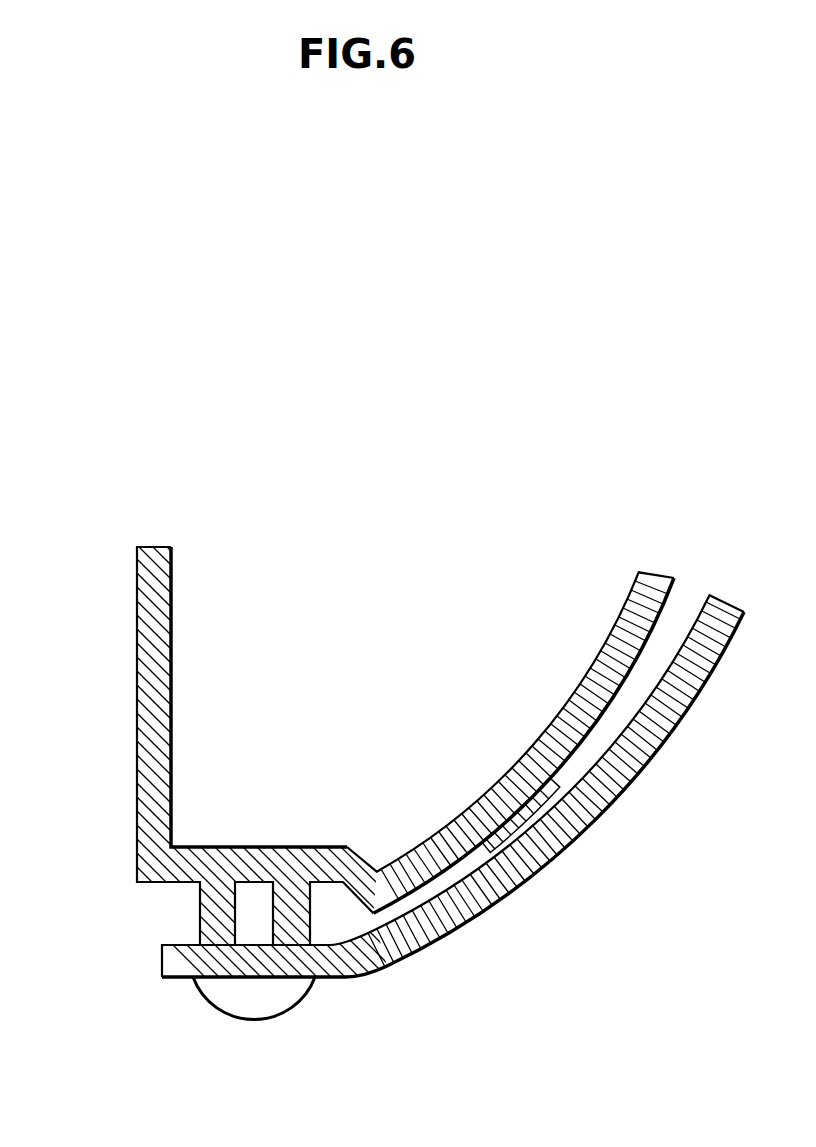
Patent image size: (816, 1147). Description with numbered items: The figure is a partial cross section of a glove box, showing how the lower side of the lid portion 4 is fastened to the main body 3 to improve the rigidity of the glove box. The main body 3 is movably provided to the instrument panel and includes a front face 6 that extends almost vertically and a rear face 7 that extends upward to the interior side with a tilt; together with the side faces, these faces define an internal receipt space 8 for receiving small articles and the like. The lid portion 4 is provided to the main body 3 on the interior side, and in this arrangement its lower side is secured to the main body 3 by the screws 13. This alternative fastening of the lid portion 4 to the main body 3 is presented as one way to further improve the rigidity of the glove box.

The main body 3 is at (148, 667).
The lid portion 4 is at (510, 873).
The front face 6 is at (152, 773).
The rear face 7 is at (588, 690).
The internal receipt space 8 is at (328, 684).
The screws 13 is at (253, 1002).